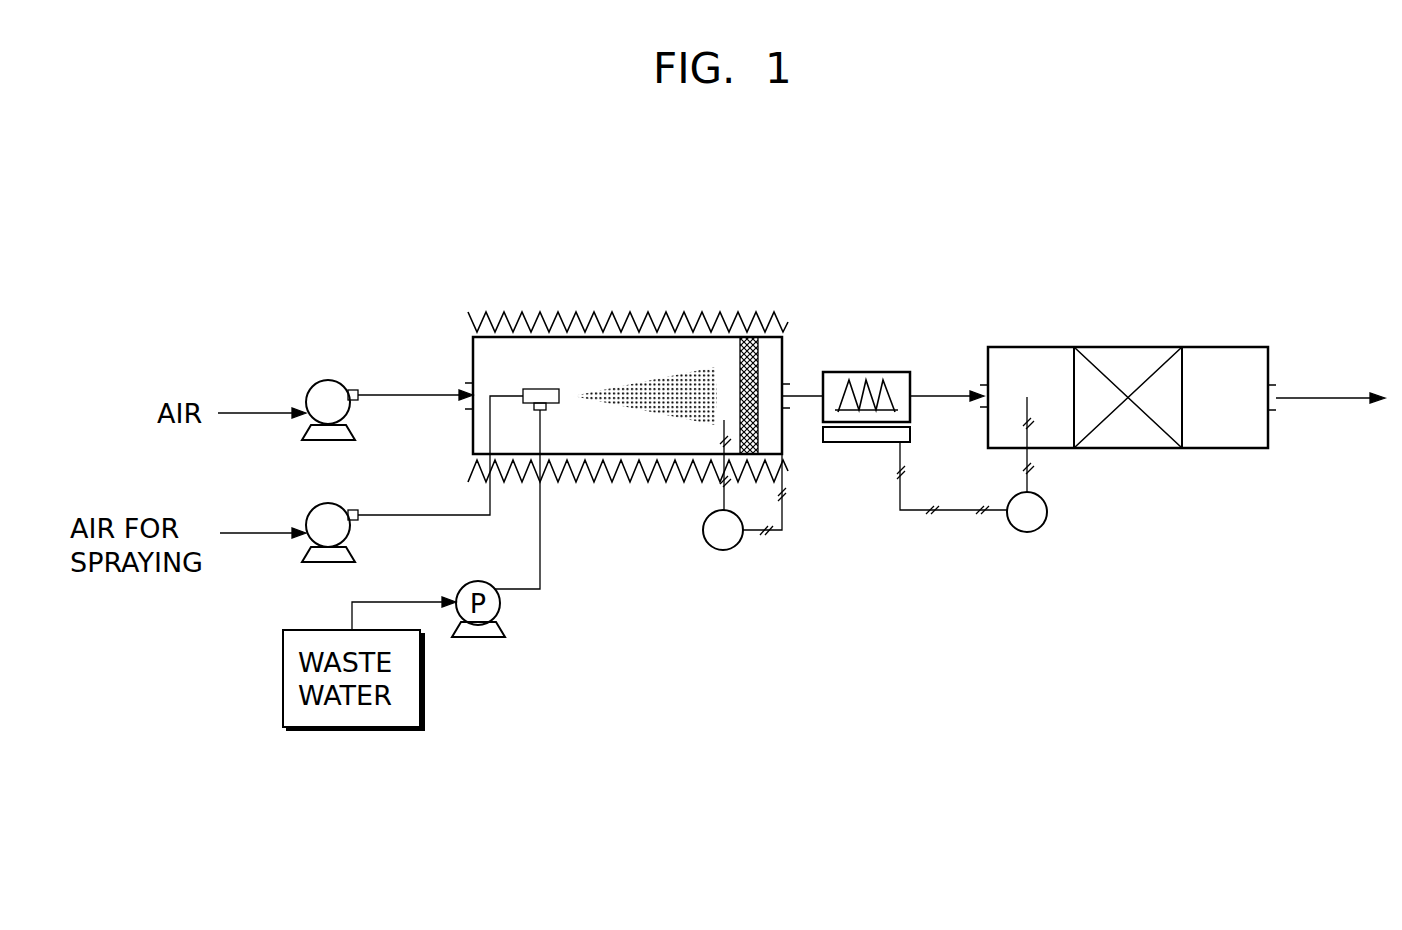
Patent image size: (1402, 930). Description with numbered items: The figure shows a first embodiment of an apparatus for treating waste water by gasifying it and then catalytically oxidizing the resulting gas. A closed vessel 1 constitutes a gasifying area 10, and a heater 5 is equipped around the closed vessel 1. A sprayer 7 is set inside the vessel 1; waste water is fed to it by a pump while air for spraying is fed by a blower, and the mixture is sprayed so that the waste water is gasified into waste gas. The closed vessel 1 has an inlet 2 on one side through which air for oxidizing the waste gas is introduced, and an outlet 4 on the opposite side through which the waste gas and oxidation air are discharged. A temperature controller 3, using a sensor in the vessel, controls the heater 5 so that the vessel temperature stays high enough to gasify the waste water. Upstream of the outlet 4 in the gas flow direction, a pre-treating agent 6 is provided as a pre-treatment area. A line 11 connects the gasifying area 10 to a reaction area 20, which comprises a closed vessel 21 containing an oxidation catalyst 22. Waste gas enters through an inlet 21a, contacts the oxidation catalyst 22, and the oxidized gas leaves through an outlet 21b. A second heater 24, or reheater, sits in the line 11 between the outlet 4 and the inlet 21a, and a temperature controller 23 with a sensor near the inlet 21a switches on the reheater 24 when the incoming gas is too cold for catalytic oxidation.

The closed vessel 1 is at (783, 455).
The inlet 2 is at (470, 382).
The temperature controller 3 is at (727, 551).
The outlet 4 is at (790, 387).
The heater 5 is at (498, 316).
The pre-treating agent 6 is at (752, 337).
The sprayer 7 is at (541, 389).
The gasifying area 10 is at (630, 290).
The line 11 is at (945, 393).
The reaction area 20 is at (1110, 318).
The closed vessel 21 is at (1153, 379).
The inlet 21a is at (986, 412).
The outlet 21b is at (1273, 412).
The oxidation catalyst 22 is at (1183, 412).
The temperature controller 23 is at (1048, 516).
The second heater 24 is at (872, 372).